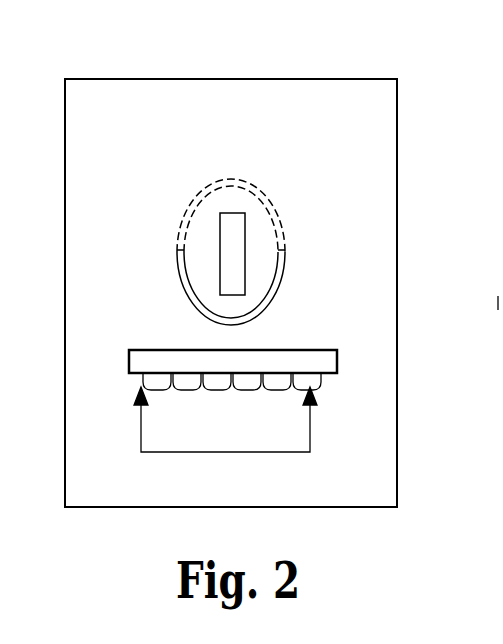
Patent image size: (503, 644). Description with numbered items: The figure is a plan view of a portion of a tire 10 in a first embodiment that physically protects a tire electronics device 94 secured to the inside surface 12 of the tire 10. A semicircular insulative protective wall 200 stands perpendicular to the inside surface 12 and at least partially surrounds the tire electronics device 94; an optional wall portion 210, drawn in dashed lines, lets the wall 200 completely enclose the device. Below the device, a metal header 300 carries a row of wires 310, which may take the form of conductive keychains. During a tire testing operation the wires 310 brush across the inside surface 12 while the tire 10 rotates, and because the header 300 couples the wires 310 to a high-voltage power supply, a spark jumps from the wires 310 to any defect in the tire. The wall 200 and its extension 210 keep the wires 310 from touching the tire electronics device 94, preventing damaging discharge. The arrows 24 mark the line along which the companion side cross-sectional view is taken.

The tire 10 is at (240, 79).
The inside surface 12 is at (122, 107).
The arrows 24 is at (312, 415).
The tire electronics device 94 is at (245, 213).
The wall 200 is at (317, 246).
The wall portion 210 is at (277, 210).
The metal header 300 is at (337, 350).
The wires 310 is at (143, 380).